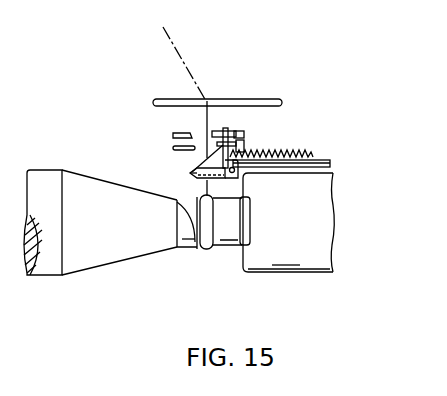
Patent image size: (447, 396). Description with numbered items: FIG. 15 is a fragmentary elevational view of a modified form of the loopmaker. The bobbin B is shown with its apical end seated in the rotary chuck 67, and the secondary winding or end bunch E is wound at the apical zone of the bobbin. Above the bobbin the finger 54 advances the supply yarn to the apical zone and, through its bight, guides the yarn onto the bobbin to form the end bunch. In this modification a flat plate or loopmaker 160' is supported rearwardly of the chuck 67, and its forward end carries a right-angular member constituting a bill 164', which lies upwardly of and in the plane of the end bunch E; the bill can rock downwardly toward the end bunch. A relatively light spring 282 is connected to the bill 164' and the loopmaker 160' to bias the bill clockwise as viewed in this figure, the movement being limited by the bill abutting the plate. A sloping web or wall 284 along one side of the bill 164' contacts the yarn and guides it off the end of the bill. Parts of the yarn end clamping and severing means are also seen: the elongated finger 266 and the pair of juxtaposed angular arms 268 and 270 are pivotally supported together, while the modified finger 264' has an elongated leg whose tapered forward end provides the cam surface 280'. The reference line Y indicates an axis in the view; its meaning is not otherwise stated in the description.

The axis line Y is at (178, 48).
The finger 54 is at (272, 98).
The cam surface 280' is at (239, 115).
The finger 264' is at (267, 124).
The elongated finger 266 is at (246, 138).
The angular arm 268 is at (179, 134).
The angular arm 270 is at (174, 147).
The sloping web 284 is at (208, 165).
The bill 164' is at (188, 170).
The spring 282 is at (280, 157).
The loopmaker 160' is at (313, 148).
The rotary chuck 67 is at (320, 258).
The end bunch E is at (203, 243).
The bobbin B is at (98, 188).